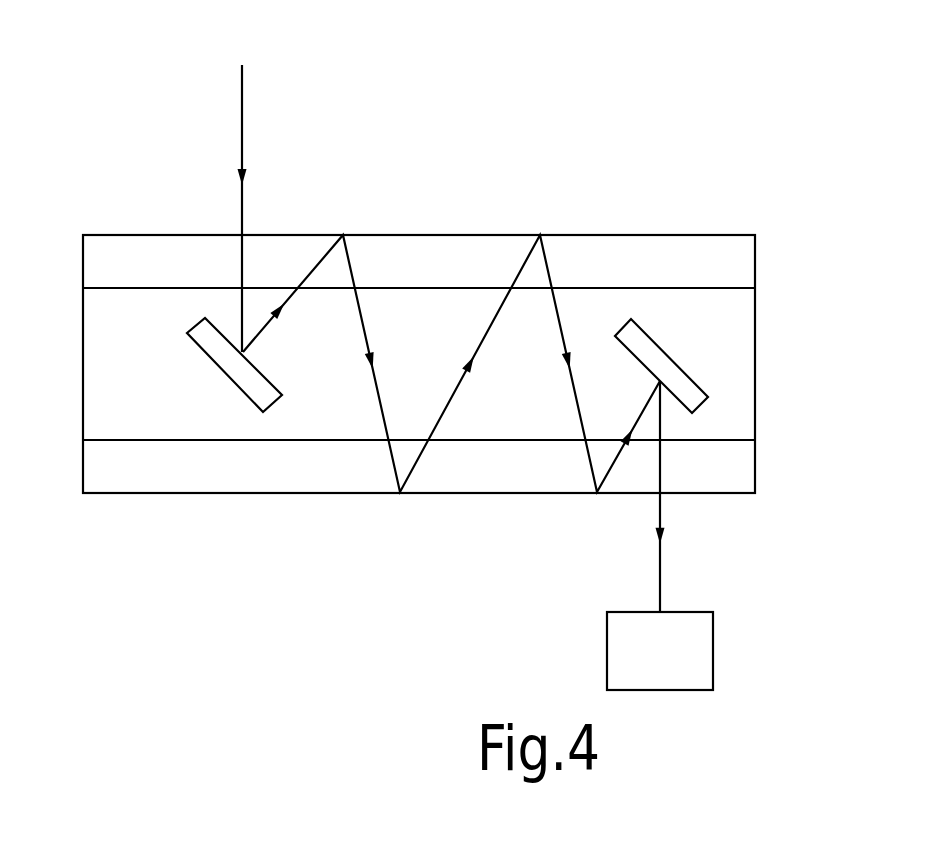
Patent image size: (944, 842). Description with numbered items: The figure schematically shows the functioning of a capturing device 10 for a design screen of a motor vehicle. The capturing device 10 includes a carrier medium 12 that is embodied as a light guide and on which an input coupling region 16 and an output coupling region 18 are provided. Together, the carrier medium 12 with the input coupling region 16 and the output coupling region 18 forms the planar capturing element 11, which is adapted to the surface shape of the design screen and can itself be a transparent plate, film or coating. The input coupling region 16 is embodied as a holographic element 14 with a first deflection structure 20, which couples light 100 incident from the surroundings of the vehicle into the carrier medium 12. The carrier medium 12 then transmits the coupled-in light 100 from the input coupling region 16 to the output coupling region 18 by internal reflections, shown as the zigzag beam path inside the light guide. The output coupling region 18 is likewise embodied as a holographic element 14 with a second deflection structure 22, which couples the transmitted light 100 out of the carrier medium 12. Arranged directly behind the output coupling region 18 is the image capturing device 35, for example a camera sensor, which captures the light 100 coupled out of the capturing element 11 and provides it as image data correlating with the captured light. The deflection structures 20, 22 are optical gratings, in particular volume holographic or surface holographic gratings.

The capturing device 10 is at (564, 178).
The capturing element 11 is at (579, 323).
The carrier medium 12 is at (743, 265).
The holographic element 14 is at (332, 412).
The input coupling region 16 is at (212, 288).
The output coupling region 18 is at (678, 442).
The first deflection structure 20 is at (252, 390).
The second deflection structure 22 is at (648, 347).
The image capturing device 35 is at (697, 650).
The light 100 is at (242, 104).